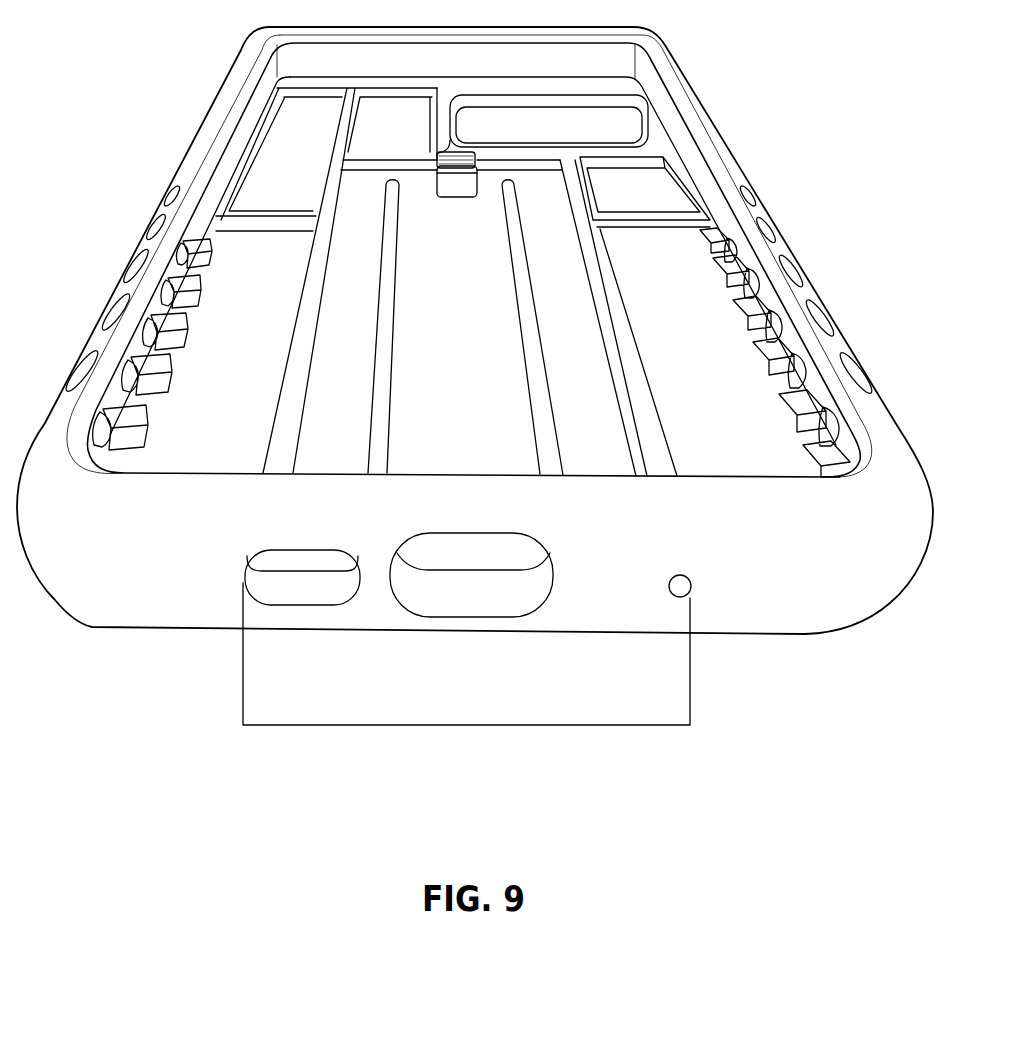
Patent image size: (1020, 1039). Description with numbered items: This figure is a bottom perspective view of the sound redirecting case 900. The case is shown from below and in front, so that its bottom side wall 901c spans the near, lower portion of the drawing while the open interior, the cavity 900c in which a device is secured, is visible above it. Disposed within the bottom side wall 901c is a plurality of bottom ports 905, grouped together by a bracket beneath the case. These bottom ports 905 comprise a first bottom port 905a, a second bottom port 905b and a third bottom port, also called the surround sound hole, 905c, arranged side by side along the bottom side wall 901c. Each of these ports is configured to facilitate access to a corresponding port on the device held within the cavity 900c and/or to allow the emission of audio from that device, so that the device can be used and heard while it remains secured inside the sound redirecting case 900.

The sound redirecting case 900 is at (806, 220).
The cavity 900c is at (718, 374).
The bottom side wall 901c is at (793, 603).
The plurality of bottom ports 905 is at (467, 725).
The first bottom port 905a is at (312, 596).
The second bottom port 905b is at (473, 604).
The third bottom port/surround sound hole 905c is at (672, 592).